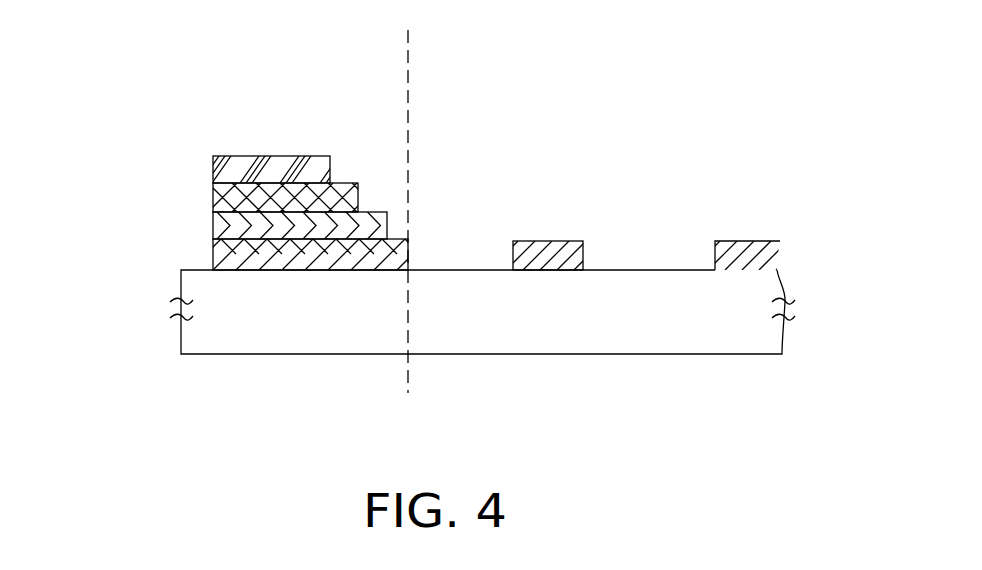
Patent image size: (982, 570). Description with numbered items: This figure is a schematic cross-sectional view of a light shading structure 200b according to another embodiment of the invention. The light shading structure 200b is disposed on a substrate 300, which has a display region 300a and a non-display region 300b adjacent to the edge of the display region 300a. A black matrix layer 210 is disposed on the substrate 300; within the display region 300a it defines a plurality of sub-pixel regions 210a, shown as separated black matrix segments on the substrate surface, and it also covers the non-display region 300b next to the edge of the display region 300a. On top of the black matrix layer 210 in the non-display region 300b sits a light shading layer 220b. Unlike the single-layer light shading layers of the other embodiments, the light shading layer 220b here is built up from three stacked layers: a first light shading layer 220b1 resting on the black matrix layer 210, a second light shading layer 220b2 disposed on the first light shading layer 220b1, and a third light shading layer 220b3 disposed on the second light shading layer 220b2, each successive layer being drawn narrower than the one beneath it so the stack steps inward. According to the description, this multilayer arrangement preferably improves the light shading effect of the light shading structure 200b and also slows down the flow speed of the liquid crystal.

The light shading structure 200b is at (237, 140).
The black matrix layer 210 is at (213, 250).
The sub-pixel regions 210a is at (643, 242).
The light shading layer 220b is at (202, 182).
The first light shading layer 220b1 is at (213, 225).
The second light shading layer 220b2 is at (213, 198).
The third light shading layer 220b3 is at (213, 170).
The substrate 300 is at (193, 339).
The display region 300a is at (782, 58).
The non-display region 300b is at (403, 58).